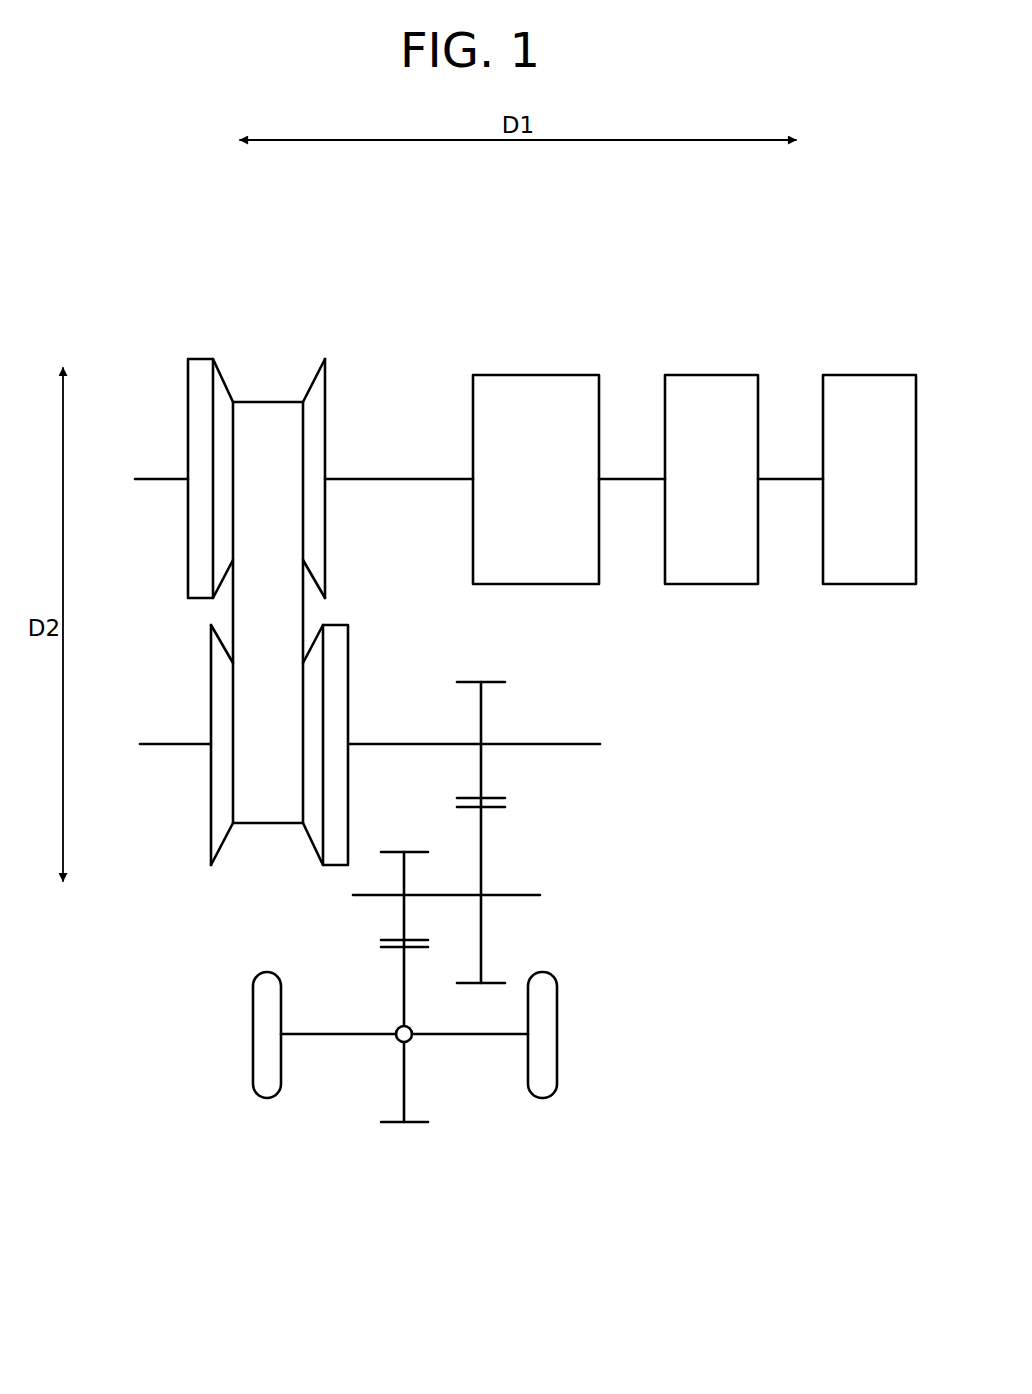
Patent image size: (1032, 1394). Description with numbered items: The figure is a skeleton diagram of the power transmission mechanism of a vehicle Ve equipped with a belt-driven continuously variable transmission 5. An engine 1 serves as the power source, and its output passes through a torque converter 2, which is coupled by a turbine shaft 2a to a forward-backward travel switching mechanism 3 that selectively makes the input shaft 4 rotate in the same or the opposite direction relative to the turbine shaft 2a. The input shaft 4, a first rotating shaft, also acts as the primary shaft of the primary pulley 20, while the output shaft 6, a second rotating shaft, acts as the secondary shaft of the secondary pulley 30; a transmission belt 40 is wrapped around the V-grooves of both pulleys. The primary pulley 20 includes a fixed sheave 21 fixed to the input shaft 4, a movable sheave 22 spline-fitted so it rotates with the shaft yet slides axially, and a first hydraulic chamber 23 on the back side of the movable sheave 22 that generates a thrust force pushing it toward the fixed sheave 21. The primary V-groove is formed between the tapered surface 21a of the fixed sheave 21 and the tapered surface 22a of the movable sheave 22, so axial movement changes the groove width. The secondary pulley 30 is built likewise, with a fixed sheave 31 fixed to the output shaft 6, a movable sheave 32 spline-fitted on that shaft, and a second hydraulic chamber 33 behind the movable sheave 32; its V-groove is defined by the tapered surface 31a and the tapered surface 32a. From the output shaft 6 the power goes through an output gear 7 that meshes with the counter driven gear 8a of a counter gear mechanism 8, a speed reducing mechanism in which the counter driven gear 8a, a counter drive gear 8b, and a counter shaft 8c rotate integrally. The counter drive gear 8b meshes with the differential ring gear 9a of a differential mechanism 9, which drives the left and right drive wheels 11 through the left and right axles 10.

The engine 1 is at (865, 375).
The torque converter 2 is at (707, 375).
The turbine shaft 2a is at (632, 479).
The forward-backward travel switching mechanism 3 is at (568, 375).
The input shaft 4 is at (435, 479).
The continuously variable transmission 5 is at (282, 269).
The output shaft 6 is at (368, 744).
The output gear 7 is at (490, 682).
The counter gear mechanism 8 is at (577, 894).
The counter driven gear 8a is at (493, 808).
The counter drive gear 8b is at (388, 852).
The counter shaft 8c is at (518, 897).
The differential mechanism 9 is at (444, 1146).
The differential ring gear 9a is at (383, 947).
The axles 10 is at (340, 1037).
The drive wheels 11 is at (268, 1098).
The primary pulley 20 is at (168, 365).
The fixed sheave 21 is at (349, 417).
The tapered surface 21a is at (311, 368).
The movable sheave 22 is at (249, 434).
The tapered surface 22a is at (237, 370).
The first hydraulic chamber 23 is at (200, 358).
The secondary pulley 30 is at (196, 663).
The fixed sheave 31 is at (165, 786).
The tapered surface 31a is at (227, 848).
The movable sheave 32 is at (277, 789).
The tapered surface 32a is at (308, 843).
The second hydraulic chamber 33 is at (338, 624).
The transmission belt 40 is at (232, 618).
The vehicle Ve is at (786, 285).